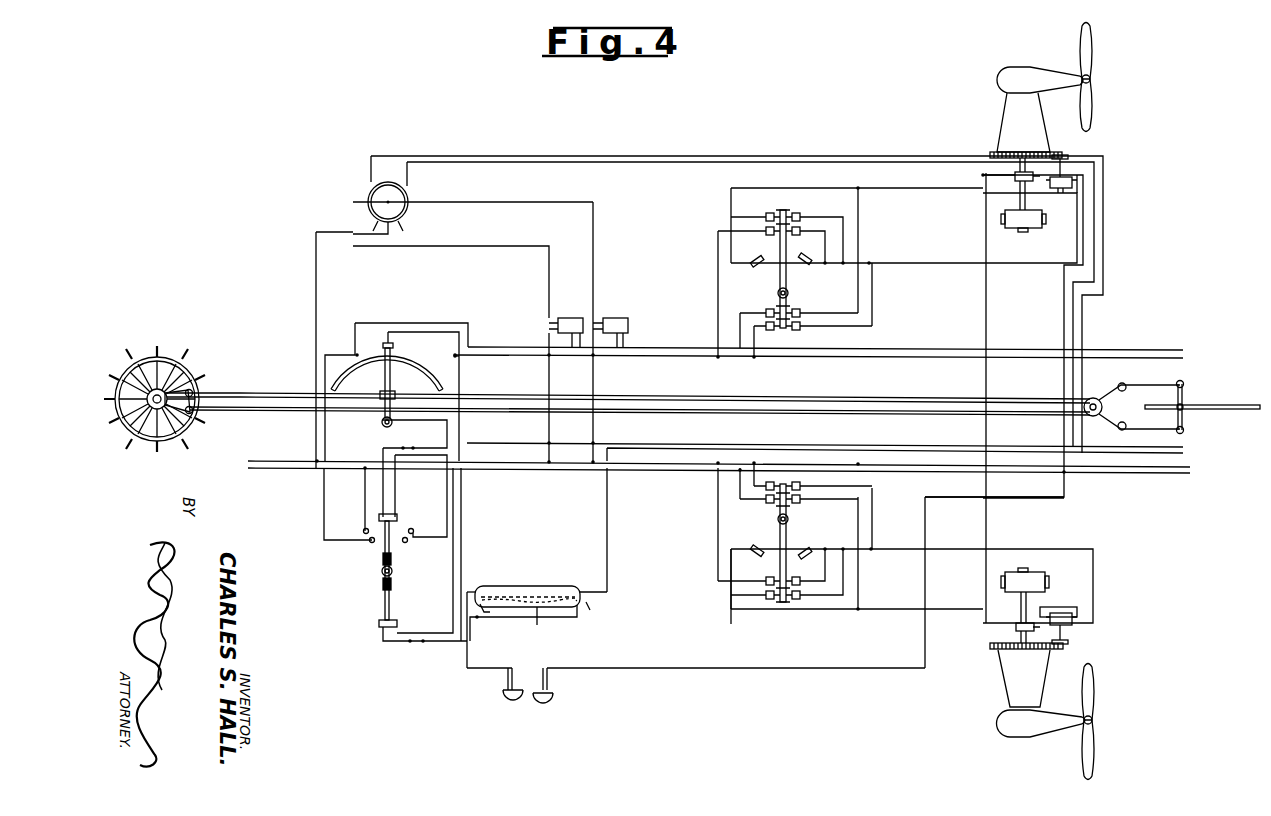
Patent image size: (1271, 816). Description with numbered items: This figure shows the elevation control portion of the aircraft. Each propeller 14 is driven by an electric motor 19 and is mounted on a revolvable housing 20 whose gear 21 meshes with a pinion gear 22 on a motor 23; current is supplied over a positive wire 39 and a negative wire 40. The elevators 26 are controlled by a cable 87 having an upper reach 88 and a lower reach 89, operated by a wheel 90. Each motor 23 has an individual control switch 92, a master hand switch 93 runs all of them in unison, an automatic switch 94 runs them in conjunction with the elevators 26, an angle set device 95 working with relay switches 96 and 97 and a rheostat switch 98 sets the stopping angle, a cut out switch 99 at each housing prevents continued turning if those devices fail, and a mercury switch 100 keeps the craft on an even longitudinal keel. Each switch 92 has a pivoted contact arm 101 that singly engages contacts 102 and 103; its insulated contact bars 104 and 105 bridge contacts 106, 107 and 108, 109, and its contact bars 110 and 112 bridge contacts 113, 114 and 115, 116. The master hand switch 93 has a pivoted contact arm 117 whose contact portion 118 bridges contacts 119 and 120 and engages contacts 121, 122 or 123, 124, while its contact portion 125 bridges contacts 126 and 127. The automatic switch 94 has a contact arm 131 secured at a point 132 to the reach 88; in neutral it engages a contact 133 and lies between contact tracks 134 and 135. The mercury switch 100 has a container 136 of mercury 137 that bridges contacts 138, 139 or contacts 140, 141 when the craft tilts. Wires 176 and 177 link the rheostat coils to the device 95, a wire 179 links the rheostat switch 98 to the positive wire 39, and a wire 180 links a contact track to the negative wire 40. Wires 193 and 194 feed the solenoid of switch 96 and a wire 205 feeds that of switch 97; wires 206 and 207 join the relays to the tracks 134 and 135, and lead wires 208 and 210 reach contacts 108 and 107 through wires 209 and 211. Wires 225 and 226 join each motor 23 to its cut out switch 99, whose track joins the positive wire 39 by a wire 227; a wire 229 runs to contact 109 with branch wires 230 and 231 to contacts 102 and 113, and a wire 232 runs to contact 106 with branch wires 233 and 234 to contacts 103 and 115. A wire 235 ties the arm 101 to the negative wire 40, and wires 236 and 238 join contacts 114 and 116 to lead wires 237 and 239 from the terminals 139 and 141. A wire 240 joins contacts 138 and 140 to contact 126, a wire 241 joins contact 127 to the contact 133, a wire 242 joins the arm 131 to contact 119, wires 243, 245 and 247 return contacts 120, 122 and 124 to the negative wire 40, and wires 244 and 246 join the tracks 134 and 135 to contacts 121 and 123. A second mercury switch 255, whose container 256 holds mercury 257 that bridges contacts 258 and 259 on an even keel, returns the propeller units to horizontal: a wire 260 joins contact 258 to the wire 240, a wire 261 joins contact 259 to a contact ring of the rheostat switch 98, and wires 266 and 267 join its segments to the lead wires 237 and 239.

The propeller 14 is at (1090, 32).
The motor 19 is at (1034, 228).
The propeller pod 20 is at (1020, 72).
The gear 21 is at (990, 648).
The pinion 22 is at (1062, 155).
The motor 23 is at (1070, 177).
The shaft coupling 26 is at (1215, 400).
The conductor 39 is at (1110, 470).
The conductor 40 is at (1170, 472).
The shaft 87 is at (243, 391).
The shaft 88 is at (262, 392).
The shaft 89 is at (255, 411).
The steering wheel 90 is at (157, 357).
The switch assembly 92 is at (781, 212).
The lever switch 93 is at (381, 580).
The lever 94 is at (384, 343).
The gauge 95 is at (410, 192).
The relay 96 is at (569, 318).
The relay 97 is at (612, 318).
The gear 98 is at (1022, 151).
The clutch 99 is at (1014, 178).
The tank 100 is at (540, 568).
The switch arm 101 is at (780, 280).
The contact 102 is at (759, 266).
The contact 103 is at (805, 268).
The contact 104 is at (790, 232).
The contact 105 is at (784, 210).
The contact 106 is at (802, 232).
The contact 107 is at (770, 236).
The contact 108 is at (800, 214).
The contact 109 is at (767, 214).
The pivot 110 is at (778, 293).
The contact 112 is at (783, 328).
The contact 113 is at (800, 310).
The contact 114 is at (766, 313).
The contact 115 is at (801, 328).
The contact 116 is at (768, 329).
The pivot 117 is at (381, 564).
The contact 118 is at (390, 526).
The conductor 119 is at (372, 492).
The contact 120 is at (395, 515).
The contact 121 is at (370, 542).
The contact 122 is at (364, 529).
The contact 123 is at (406, 542).
The contact 124 is at (414, 530).
The contact 125 is at (397, 625).
The contact 126 is at (380, 627).
The conductor 127 is at (385, 638).
The arc segment 131 is at (385, 377).
The pivot block 132 is at (395, 393).
The contact 133 is at (394, 344).
The contact 134 is at (342, 375).
The contact 135 is at (436, 377).
The conductor 136 is at (552, 586).
The pipe 137 is at (540, 626).
The pipe 138 is at (580, 612).
The outlet 139 is at (592, 604).
The outlet 140 is at (496, 609).
The conductor 141 is at (472, 590).
The conductor 176 is at (688, 156).
The conductor 177 is at (648, 160).
The conductor 179 is at (985, 310).
The conductor 180 is at (316, 289).
The conductor 193 is at (549, 289).
The conductor 194 is at (549, 380).
The conductor 205 is at (593, 382).
The conductor 206 is at (521, 347).
The conductor 207 is at (508, 358).
The conductor 208 is at (920, 350).
The conductor 209 is at (850, 350).
The conductor 210 is at (671, 348).
The conductor 211 is at (718, 290).
The conductor 225 is at (1036, 188).
The conductor 226 is at (1085, 193).
The conductor 227 is at (983, 180).
The conductor 229 is at (882, 188).
The conductor 230 is at (731, 250).
The conductor 231 is at (858, 231).
The conductor 232 is at (932, 263).
The conductor 233 is at (823, 263).
The conductor 234 is at (872, 294).
The conductor 235 is at (786, 380).
The conductor 236 is at (740, 313).
The conductor 237 is at (650, 448).
The conductor 238 is at (754, 330).
The conductor 239 is at (632, 443).
The conductor 240 is at (470, 638).
The conductor 241 is at (447, 641).
The conductor 242 is at (403, 446).
The conductor 243 is at (395, 480).
The conductor 244 is at (324, 493).
The conductor 245 is at (365, 480).
The conductor 246 is at (447, 545).
The conductor 247 is at (447, 492).
The mercury cup 255 is at (510, 700).
The mercury cup 256 is at (554, 688).
The mercury 257 is at (540, 704).
The electrode 258 is at (507, 680).
The electrode 259 is at (548, 678).
The conductor 260 is at (466, 668).
The conductor 261 is at (658, 668).
The conductor 266 is at (1082, 328).
The conductor 267 is at (1082, 308).